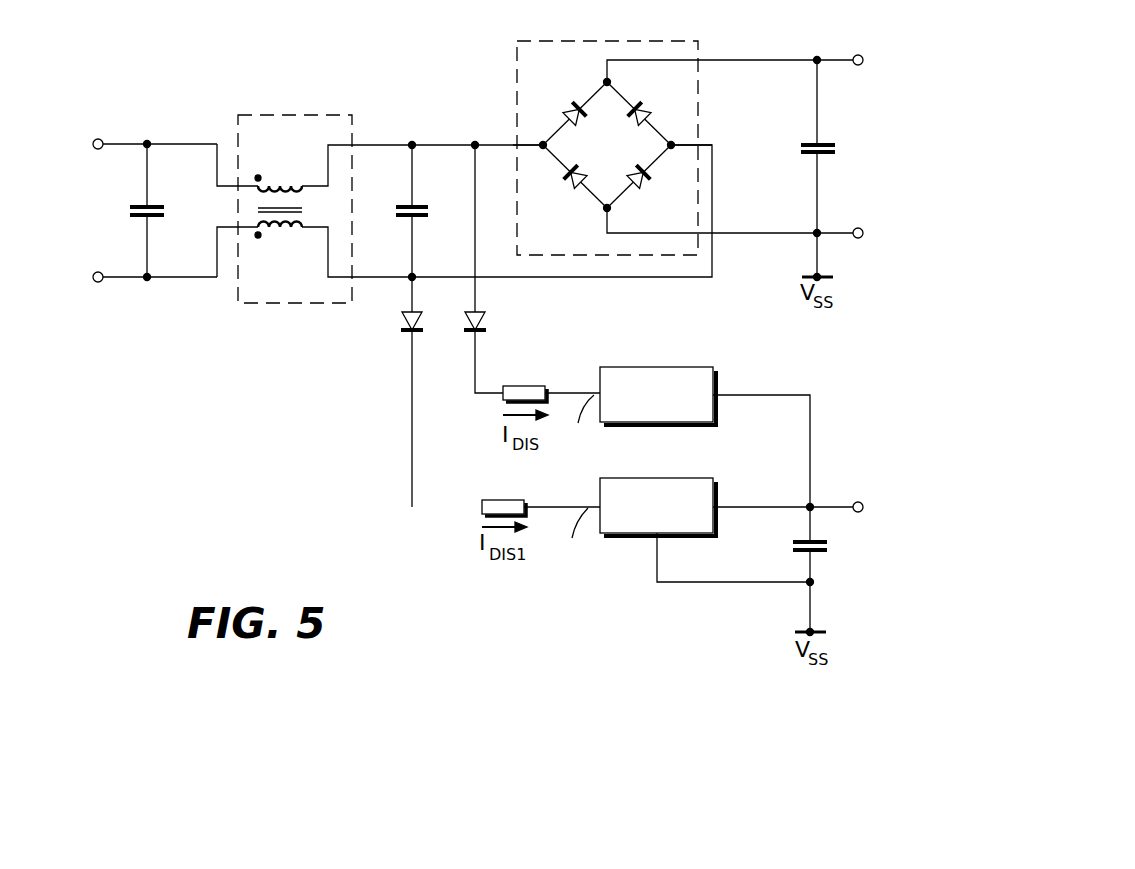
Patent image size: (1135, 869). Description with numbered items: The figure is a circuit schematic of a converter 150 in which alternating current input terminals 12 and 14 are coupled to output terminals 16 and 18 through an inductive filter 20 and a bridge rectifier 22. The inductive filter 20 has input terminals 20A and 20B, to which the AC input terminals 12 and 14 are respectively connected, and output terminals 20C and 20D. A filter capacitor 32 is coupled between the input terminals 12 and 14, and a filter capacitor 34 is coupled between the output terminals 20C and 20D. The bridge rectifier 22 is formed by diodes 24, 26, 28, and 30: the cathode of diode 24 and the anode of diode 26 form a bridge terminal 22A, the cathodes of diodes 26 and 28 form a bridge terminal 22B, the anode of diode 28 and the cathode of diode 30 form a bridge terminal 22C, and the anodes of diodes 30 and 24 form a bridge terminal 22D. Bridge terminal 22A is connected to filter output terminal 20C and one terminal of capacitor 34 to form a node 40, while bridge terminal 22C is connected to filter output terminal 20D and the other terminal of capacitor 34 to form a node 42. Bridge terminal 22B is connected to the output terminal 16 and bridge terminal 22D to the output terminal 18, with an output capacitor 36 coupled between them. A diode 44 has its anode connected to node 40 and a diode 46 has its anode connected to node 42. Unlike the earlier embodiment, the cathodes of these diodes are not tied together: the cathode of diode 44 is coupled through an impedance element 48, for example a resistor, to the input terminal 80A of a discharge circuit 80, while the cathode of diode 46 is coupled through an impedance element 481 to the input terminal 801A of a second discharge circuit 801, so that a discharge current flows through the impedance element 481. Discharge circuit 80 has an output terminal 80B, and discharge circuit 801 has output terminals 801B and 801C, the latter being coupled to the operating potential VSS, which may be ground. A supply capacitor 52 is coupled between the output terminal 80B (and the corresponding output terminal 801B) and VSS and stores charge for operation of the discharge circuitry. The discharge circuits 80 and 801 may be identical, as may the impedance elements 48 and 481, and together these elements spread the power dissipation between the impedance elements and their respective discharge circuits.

The AC input terminal 12 is at (93, 143).
The AC input terminal 14 is at (93, 271).
The output terminal 16 is at (863, 56).
The output terminal 18 is at (863, 231).
The inductive filter 20 is at (282, 115).
The input terminal 20A is at (189, 143).
The input terminal 20B is at (186, 280).
The output terminal 20C is at (383, 143).
The output terminal 20D is at (383, 275).
The bridge rectifier 22 is at (619, 40).
The bridge terminal 22A is at (513, 145).
The bridge terminal 22B is at (708, 60).
The bridge terminal 22C is at (715, 143).
The bridge terminal 22D is at (731, 234).
The diode 24 is at (575, 186).
The diode 26 is at (573, 107).
The diode 28 is at (648, 107).
The diode 30 is at (648, 190).
The filter capacitor 32 is at (160, 208).
The filter capacitor 34 is at (428, 207).
The output capacitor 36 is at (832, 145).
The node 40 is at (448, 143).
The node 42 is at (446, 275).
The diode 44 is at (483, 323).
The diode 46 is at (404, 323).
The impedance element 48 is at (528, 386).
The impedance element 481 is at (502, 500).
The supply capacitor 52 is at (826, 542).
The discharge circuit 80 is at (681, 367).
The input terminal 80A is at (577, 423).
The output terminal 80B is at (738, 394).
The discharge circuit 801 is at (681, 477).
The input terminal 801A is at (571, 541).
The output terminal 801B is at (738, 507).
The output terminal 801C is at (645, 582).
The converter 150 is at (324, 545).